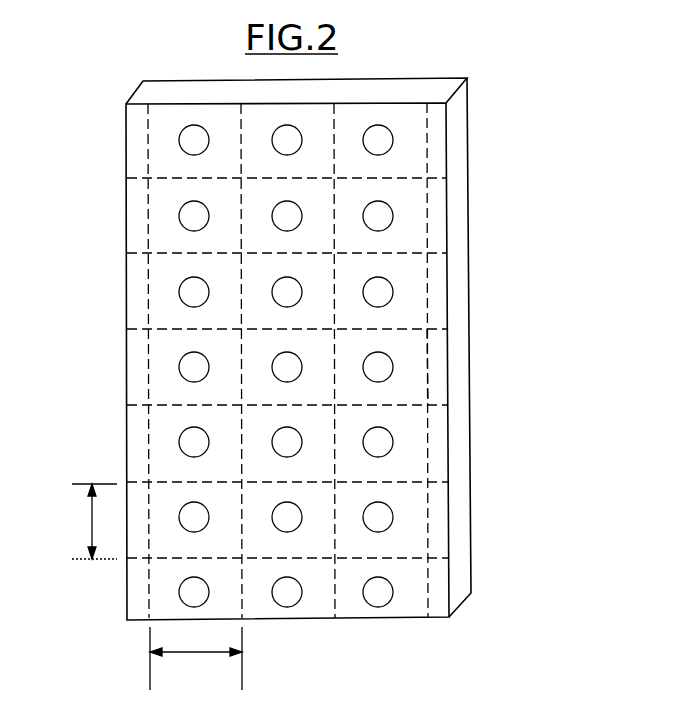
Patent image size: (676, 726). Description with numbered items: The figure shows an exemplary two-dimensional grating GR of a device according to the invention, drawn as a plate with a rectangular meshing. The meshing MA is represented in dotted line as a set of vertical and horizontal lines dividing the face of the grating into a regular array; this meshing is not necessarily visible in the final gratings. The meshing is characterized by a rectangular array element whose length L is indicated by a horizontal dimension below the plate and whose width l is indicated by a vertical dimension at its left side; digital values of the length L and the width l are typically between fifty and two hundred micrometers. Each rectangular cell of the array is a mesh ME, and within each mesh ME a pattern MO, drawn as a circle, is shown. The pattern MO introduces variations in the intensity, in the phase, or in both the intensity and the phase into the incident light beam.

The two-dimensional grating GR is at (457, 154).
The pattern MO is at (180, 292).
The meshing MA is at (427, 377).
The mesh ME is at (407, 530).
The length of rectangular array element L is at (196, 672).
The width of rectangular array element l is at (87, 521).